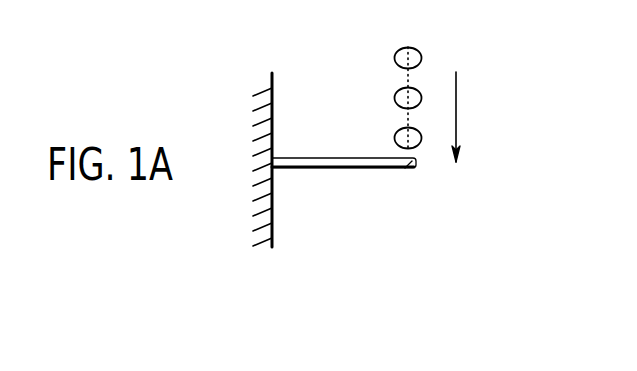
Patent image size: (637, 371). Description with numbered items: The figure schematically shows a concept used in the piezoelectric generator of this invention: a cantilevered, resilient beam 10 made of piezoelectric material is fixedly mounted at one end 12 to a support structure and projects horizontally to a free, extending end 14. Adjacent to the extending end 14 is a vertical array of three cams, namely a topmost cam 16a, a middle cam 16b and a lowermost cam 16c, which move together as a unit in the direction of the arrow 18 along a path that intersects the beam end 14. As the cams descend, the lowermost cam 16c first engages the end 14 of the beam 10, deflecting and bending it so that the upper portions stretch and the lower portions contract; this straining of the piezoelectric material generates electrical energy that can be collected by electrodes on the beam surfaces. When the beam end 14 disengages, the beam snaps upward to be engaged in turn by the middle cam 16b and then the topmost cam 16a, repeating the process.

The cantilevered resilient beam 10 is at (315, 170).
The fixedly mounted end 12 is at (275, 112).
The extending end of the beam 14 is at (405, 168).
The topmost cam 16a is at (408, 47).
The middle cam 16b is at (395, 98).
The lowermost cam 16c is at (421, 143).
The arrow 18 is at (456, 110).